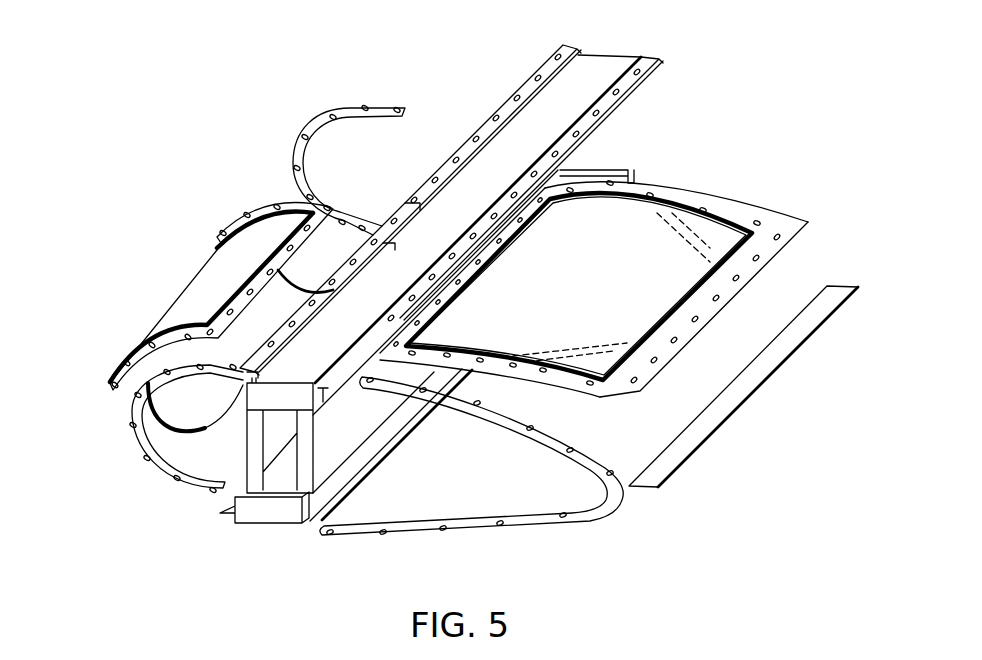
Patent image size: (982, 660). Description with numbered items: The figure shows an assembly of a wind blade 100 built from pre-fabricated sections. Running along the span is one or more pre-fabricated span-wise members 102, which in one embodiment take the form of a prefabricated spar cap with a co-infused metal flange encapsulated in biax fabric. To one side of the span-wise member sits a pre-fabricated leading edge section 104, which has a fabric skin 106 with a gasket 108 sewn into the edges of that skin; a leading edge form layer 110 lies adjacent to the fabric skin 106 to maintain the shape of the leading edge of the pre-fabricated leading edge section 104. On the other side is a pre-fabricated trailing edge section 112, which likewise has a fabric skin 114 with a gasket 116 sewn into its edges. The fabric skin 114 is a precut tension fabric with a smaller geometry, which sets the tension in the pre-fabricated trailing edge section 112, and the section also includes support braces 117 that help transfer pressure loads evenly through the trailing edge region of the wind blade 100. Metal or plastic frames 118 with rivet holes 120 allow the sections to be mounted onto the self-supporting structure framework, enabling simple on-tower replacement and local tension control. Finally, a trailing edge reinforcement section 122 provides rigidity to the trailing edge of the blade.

The wind blade 100 is at (150, 50).
The pre-fabricated span-wise member 102 is at (618, 55).
The pre-fabricated leading edge section 104 is at (175, 288).
The fabric skin 106 is at (223, 268).
The gasket 108 is at (127, 350).
The leading edge form layer 110 is at (186, 412).
The pre-fabricated trailing edge section 112 is at (682, 188).
The fabric skin 114 is at (598, 253).
The gasket 116 is at (677, 306).
The support braces 117 is at (600, 343).
The metal or plastic frames 118 is at (624, 101).
The rivet holes 120 is at (543, 71).
The trailing edge reinforcement section 122 is at (765, 378).